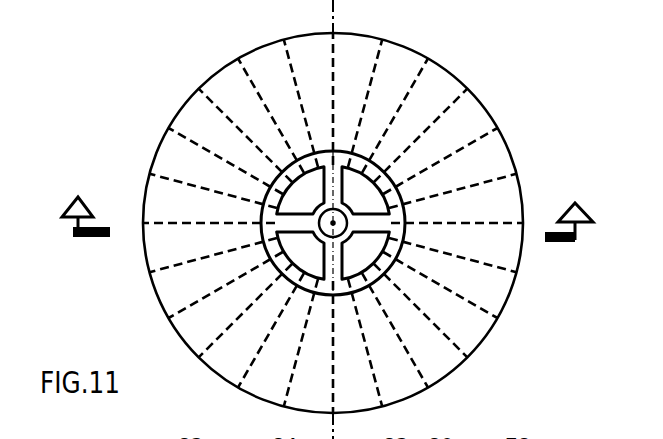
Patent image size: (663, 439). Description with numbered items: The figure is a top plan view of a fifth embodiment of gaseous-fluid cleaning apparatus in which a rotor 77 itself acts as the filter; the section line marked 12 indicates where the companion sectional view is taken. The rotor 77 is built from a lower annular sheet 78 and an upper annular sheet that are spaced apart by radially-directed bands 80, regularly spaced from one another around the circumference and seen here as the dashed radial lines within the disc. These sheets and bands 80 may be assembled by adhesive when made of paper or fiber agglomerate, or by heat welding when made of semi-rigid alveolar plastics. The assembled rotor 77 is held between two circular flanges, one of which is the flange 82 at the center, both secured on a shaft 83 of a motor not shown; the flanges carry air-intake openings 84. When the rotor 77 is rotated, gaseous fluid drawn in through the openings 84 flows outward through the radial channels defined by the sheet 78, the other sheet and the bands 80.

The rotor 77 is at (560, 167).
The lower annular sheet 78 is at (502, 208).
The radially-directed bands 80 is at (473, 223).
The circular flange 82 is at (431, 163).
The shaft 83 is at (424, 136).
The air-intake openings 84 is at (371, 122).
The section line 12- 12 is at (329, 207).